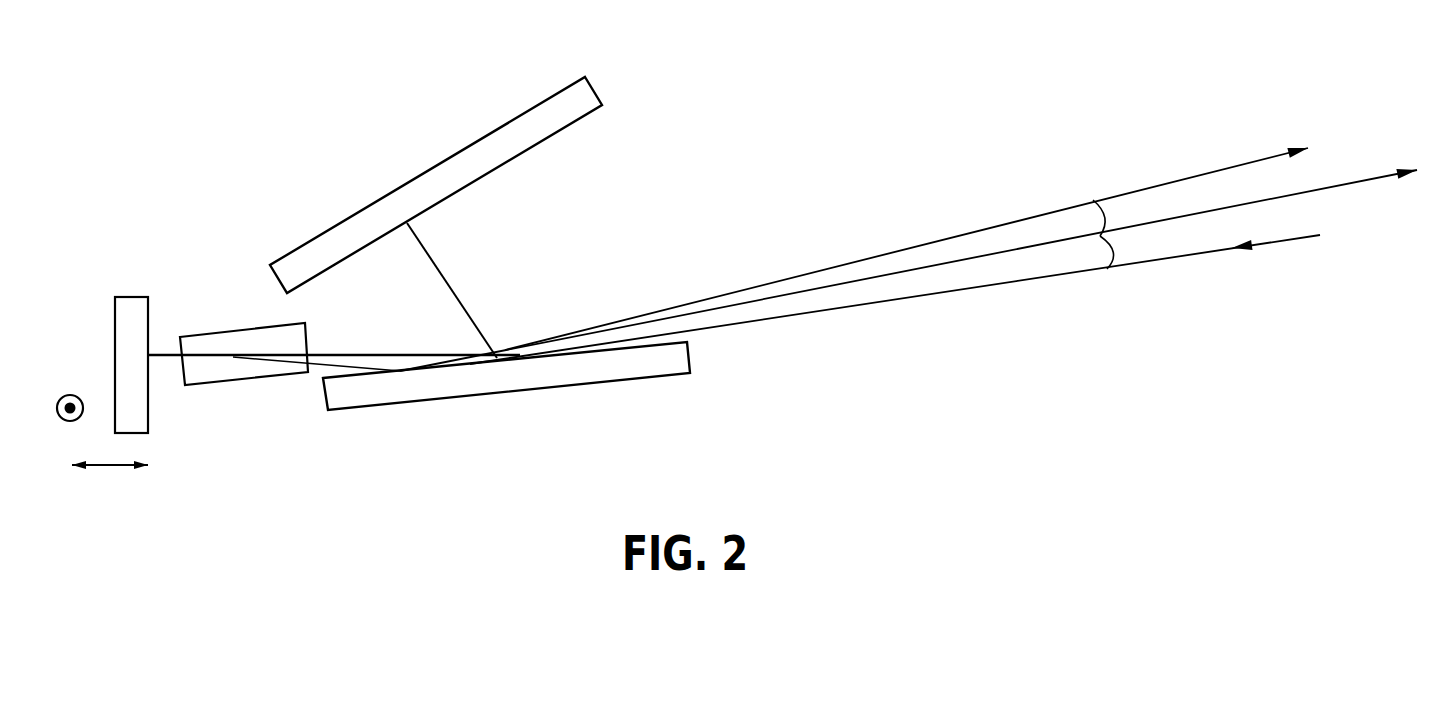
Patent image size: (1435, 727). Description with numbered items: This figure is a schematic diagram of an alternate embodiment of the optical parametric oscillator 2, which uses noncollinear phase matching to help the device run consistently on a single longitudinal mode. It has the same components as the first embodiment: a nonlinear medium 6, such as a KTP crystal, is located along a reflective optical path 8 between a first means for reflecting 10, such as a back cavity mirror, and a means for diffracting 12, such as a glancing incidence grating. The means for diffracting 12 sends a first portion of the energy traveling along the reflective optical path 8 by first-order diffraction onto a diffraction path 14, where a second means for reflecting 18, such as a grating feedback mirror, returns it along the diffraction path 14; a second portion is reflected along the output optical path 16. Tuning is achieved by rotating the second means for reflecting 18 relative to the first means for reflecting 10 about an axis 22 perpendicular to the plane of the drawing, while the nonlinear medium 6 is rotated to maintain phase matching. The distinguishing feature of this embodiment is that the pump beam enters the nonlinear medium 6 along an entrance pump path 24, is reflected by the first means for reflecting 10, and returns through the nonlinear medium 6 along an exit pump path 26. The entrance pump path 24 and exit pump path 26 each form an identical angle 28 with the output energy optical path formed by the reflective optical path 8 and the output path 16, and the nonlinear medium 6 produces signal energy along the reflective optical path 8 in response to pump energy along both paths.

The optical parametric oscillator 2 is at (155, 205).
The nonlinear medium 6 is at (213, 333).
The reflective optical path 8 is at (158, 358).
The first means for reflecting optical energy 10 is at (128, 296).
The means for diffracting optical energy 12 is at (583, 387).
The diffraction path 14 is at (455, 290).
The output optical path 16 is at (1352, 180).
The second means for reflecting optical energy 18 is at (373, 203).
The axis 22 is at (92, 391).
The entrance pump path 24 is at (1290, 240).
The exit pump path 26 is at (1228, 167).
The angle 28 is at (1104, 198).